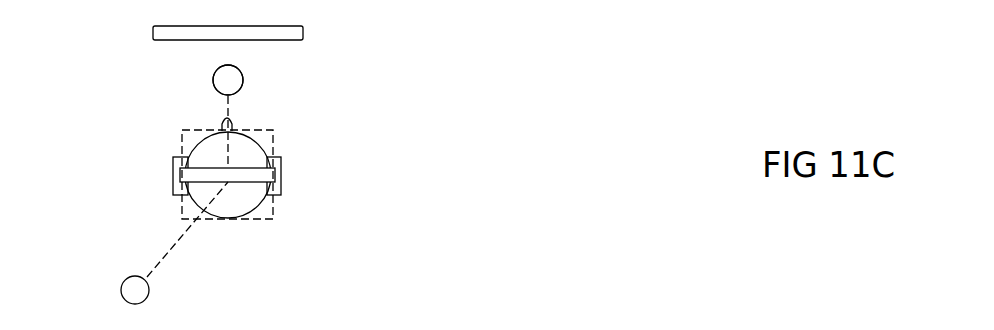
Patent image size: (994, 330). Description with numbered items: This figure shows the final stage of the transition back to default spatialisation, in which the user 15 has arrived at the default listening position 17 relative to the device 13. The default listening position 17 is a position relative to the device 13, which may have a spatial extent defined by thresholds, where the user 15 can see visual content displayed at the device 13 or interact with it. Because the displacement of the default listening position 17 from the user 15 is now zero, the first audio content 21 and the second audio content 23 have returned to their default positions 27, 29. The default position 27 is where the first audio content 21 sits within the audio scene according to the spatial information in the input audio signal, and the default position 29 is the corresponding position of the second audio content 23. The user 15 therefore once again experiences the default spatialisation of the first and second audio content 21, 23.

The device 13 is at (322, 35).
The user 15 is at (267, 145).
The default listening position 17 is at (275, 212).
The first audio content 21 is at (250, 80).
The second audio content 23 is at (130, 265).
The default position 27 is at (201, 80).
The default position 29 is at (110, 284).